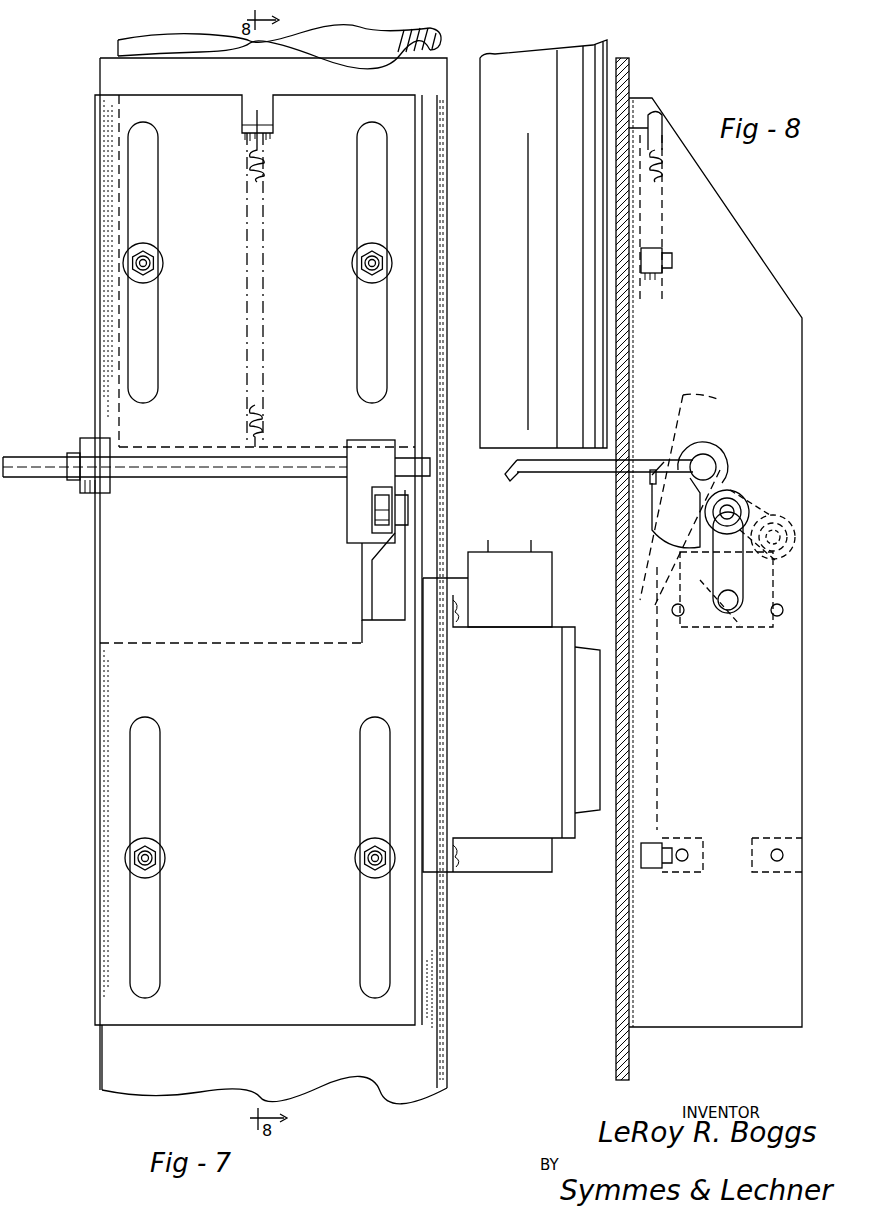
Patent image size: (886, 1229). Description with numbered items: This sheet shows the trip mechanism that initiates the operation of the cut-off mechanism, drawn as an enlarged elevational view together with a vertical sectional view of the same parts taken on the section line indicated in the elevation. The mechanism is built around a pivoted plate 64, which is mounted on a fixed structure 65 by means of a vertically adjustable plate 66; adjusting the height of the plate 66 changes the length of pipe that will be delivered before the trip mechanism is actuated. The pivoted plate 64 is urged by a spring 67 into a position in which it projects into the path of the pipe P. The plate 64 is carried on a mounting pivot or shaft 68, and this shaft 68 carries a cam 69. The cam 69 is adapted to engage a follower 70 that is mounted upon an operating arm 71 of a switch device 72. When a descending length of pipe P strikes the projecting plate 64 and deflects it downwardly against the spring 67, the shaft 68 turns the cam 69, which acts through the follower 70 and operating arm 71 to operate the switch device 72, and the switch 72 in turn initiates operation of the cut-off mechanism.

In FIG. 7, the pipe P is at (118, 46).
In FIG. 8, the pipe P is at (510, 276).
In FIG. 7, the pivoted plate 64 is at (33, 458).
In FIG. 8, the pivoted plate 64 is at (540, 475).
In FIG. 7, the fixed structure 65 is at (294, 1065).
In FIG. 8, the fixed structure 65 is at (617, 1046).
In FIG. 7, the vertically adjustable plate 66 is at (270, 983).
In FIG. 8, the vertically adjustable plate 66 is at (634, 778).
In FIG. 7, the spring 67 is at (266, 165).
In FIG. 8, the spring 67 is at (665, 165).
In FIG. 7, the mounting pivot or shaft 68 is at (75, 490).
In FIG. 8, the mounting pivot or shaft 68 is at (703, 462).
In FIG. 7, the cam 69 is at (364, 442).
In FIG. 8, the cam 69 is at (658, 497).
In FIG. 7, the follower 70 is at (378, 520).
In FIG. 8, the follower 70 is at (733, 492).
In FIG. 7, the operating arm 71 is at (380, 588).
In FIG. 8, the operating arm 71 is at (710, 615).
In FIG. 7, the switch device 72 is at (512, 820).
In FIG. 8, the switch device 72 is at (735, 828).